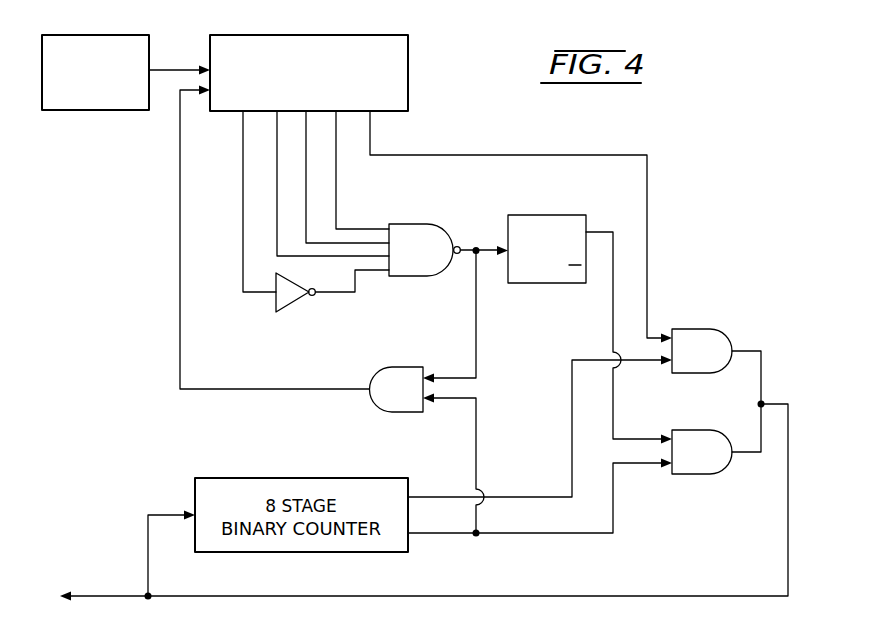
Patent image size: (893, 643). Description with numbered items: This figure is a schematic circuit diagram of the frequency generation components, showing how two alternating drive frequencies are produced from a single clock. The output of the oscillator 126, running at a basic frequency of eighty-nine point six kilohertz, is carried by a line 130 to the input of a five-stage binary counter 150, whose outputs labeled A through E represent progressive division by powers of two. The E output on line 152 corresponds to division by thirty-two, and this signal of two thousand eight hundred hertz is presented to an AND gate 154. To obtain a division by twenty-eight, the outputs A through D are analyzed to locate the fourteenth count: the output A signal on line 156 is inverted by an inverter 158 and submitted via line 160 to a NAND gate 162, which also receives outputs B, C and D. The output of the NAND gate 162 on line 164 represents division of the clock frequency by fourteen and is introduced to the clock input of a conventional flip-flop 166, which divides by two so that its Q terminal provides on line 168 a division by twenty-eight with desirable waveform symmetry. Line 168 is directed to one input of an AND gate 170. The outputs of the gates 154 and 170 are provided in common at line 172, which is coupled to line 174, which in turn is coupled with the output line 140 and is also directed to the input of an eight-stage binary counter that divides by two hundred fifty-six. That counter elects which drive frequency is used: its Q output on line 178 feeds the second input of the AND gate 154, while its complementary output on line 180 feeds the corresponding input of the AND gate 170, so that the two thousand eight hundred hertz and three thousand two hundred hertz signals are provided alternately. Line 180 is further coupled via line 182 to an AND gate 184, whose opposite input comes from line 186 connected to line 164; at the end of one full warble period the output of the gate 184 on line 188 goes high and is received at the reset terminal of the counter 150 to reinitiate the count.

The oscillator 126 is at (108, 35).
The line 130 is at (181, 68).
The 5-stage binary counter 150 is at (318, 35).
The line 152 is at (491, 155).
The AND gate 154 is at (708, 329).
The line 156 is at (243, 265).
The inverter 158 is at (293, 303).
The line 160 is at (355, 292).
The NAND gate 162 is at (421, 224).
The line 164 is at (462, 248).
The flip-flop 166 is at (546, 215).
The line 168 is at (604, 232).
The AND gate 170 is at (694, 474).
The line 172 is at (740, 452).
The line 174 is at (672, 596).
The line 178 is at (511, 497).
The line 180 is at (527, 533).
The line 182 is at (477, 434).
The AND gate 184 is at (372, 411).
The line 186 is at (477, 330).
The line 188 is at (272, 389).
The output line 140 is at (117, 596).